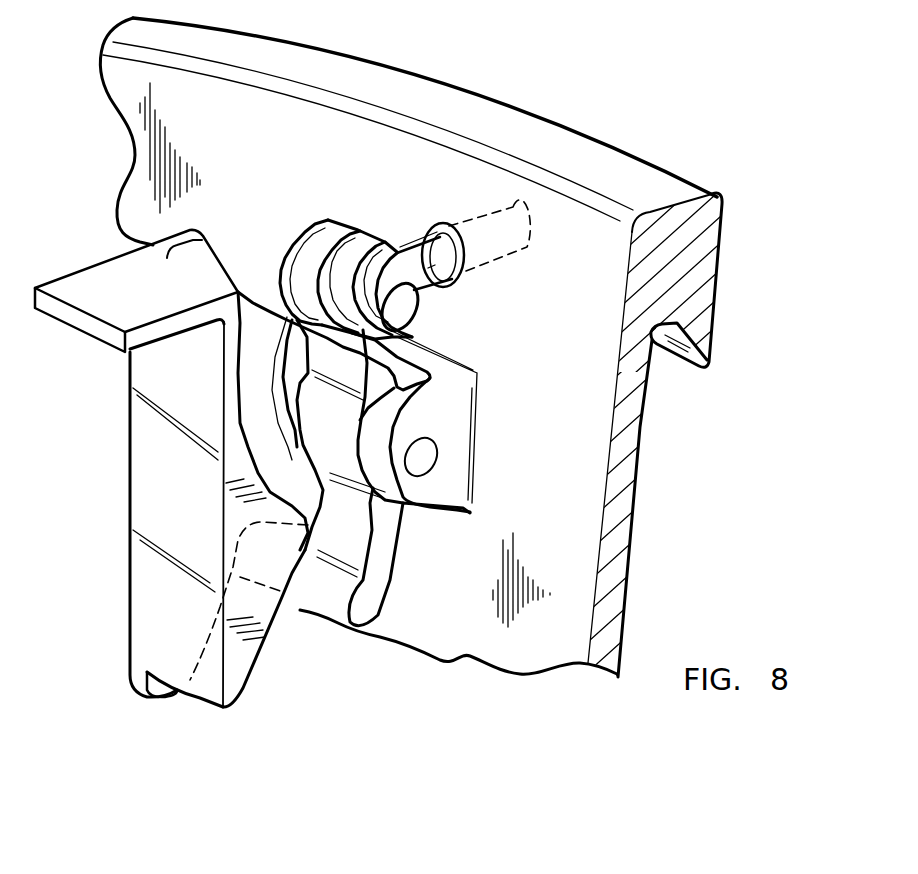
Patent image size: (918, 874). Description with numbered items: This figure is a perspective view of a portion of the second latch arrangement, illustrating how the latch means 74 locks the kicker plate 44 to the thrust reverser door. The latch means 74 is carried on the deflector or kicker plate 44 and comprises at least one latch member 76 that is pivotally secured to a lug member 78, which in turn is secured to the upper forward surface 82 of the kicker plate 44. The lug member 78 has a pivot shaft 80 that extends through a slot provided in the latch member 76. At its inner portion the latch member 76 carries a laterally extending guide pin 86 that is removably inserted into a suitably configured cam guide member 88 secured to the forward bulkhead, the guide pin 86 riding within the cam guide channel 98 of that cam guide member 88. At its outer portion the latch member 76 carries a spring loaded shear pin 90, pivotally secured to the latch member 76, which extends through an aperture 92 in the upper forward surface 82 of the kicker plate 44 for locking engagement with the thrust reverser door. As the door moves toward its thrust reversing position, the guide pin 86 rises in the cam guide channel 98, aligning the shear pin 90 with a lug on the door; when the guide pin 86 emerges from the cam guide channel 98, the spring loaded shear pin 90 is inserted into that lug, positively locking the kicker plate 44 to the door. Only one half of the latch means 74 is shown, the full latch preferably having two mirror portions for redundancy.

The kicker plate 44 is at (634, 524).
The upper forward surface 82 is at (626, 272).
The latch means 74 is at (287, 212).
The latch member 76 is at (393, 540).
The lug member 78 is at (452, 387).
The pivot shaft 80 is at (437, 463).
The guide pin 86 is at (307, 527).
The cam guide member 88 is at (130, 390).
The spring loaded shear pin 90 is at (410, 252).
The aperture 92 is at (453, 280).
The cam guide channel 98 is at (243, 384).